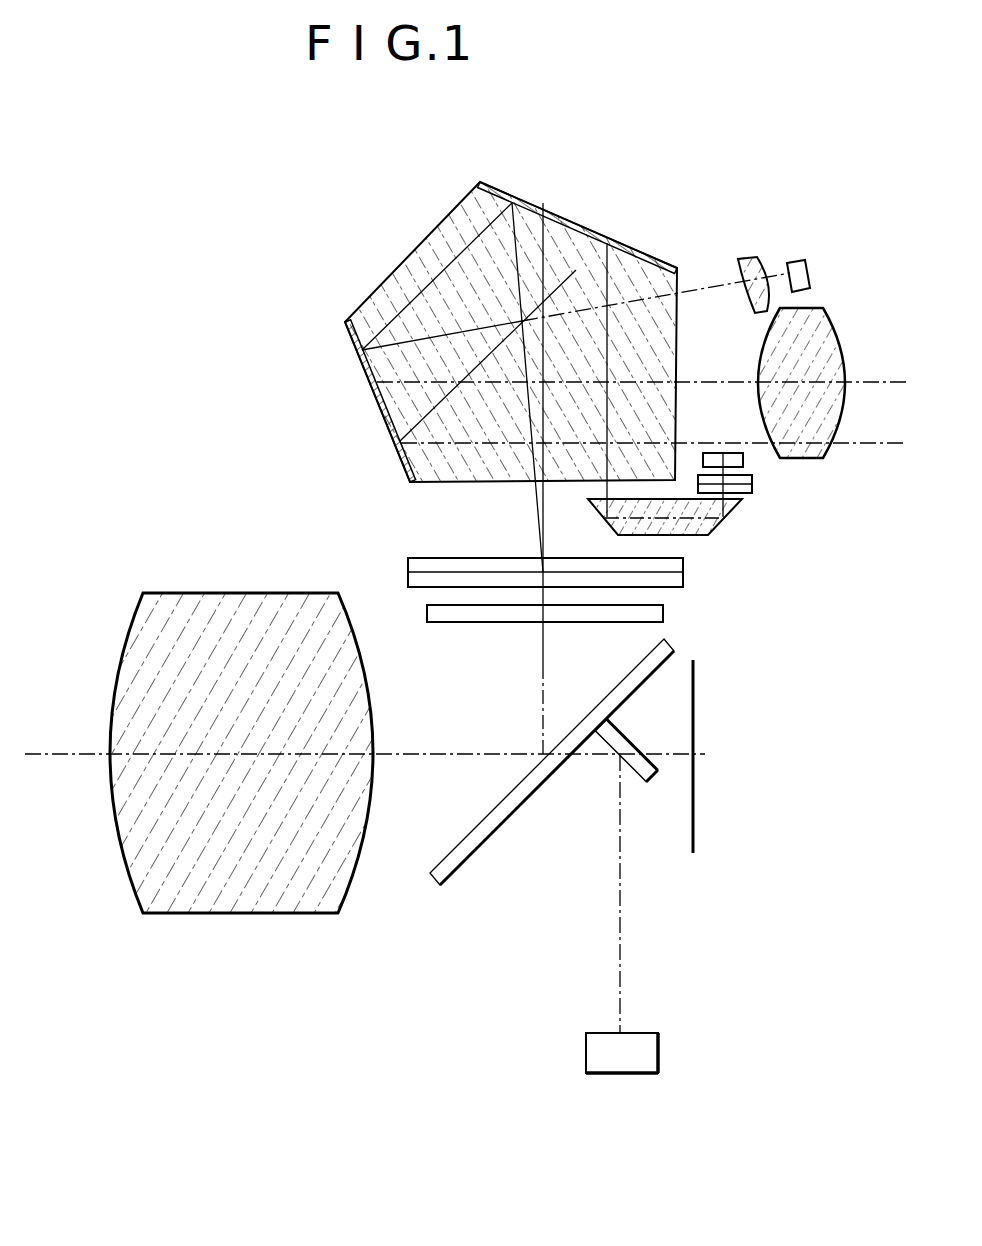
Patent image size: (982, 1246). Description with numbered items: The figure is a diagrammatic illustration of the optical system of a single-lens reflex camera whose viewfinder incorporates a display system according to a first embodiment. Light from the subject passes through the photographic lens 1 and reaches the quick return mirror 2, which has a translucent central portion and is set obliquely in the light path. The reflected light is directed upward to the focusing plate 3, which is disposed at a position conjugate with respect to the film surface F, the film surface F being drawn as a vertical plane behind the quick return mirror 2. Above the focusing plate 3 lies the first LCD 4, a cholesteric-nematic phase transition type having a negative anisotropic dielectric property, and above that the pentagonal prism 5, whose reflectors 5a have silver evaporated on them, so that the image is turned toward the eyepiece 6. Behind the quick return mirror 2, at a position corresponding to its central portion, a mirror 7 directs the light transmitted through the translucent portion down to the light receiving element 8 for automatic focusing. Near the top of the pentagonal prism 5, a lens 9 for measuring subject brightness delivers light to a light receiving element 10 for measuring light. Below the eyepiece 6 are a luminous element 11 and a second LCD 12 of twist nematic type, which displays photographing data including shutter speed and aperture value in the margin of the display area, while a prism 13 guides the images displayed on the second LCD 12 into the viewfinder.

The photographic lens 1 is at (275, 888).
The quick return mirror 2 is at (498, 825).
The focusing plate 3 is at (480, 622).
The first LCD 4 is at (430, 558).
The pentagonal prism 5 is at (390, 273).
The reflectors 5a is at (570, 218).
The eyepiece 6 is at (837, 340).
The mirror 7 is at (633, 780).
The light receiving element for automatic focusing 8 is at (658, 1062).
The lens for measuring subject brightness 9 is at (748, 257).
The light receiving element 10 is at (798, 262).
The luminous element 11 is at (743, 460).
The second LCD 12 is at (752, 490).
The prism for guiding images 13 is at (702, 537).
The film surface F is at (695, 832).